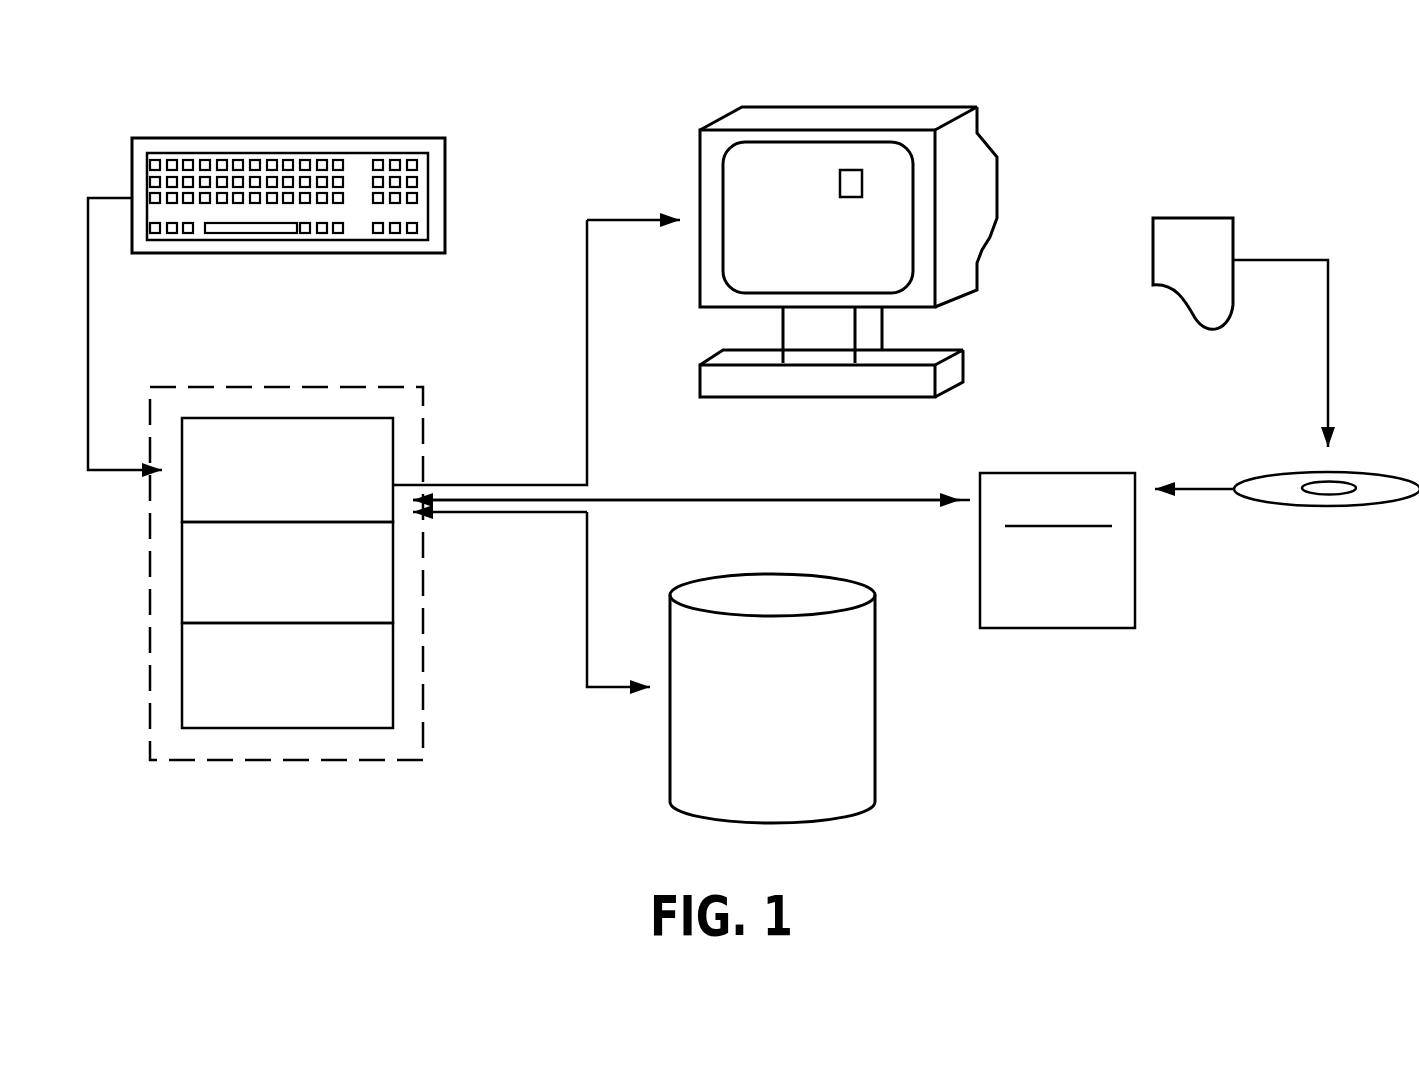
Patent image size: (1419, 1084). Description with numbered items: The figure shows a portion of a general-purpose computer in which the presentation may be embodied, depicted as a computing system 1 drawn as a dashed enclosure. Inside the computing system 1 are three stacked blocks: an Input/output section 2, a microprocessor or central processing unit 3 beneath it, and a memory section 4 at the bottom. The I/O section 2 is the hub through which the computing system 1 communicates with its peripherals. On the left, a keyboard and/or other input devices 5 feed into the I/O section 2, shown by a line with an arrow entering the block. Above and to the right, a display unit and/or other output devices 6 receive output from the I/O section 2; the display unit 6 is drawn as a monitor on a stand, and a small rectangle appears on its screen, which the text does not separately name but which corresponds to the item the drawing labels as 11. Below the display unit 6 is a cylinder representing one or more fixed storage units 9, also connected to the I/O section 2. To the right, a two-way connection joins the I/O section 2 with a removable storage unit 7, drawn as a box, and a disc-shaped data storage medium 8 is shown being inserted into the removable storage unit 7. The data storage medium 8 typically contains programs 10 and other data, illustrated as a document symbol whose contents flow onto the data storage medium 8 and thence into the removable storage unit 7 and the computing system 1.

The computing system 1 is at (357, 386).
The Input/output section 2 is at (215, 430).
The central processing unit 3 is at (373, 600).
The memory section 4 is at (373, 710).
The keyboard 5 is at (447, 200).
The display unit 6 is at (698, 183).
The removable storage unit 7 is at (1055, 473).
The data storage medium 8 is at (1275, 473).
The fixed storage unit 9 is at (875, 693).
The programs 10 is at (1153, 247).
The icon on display 11 is at (851, 170).